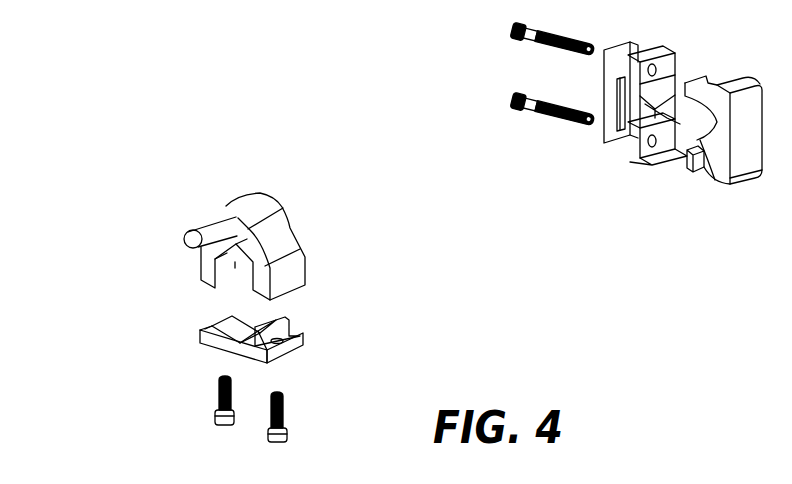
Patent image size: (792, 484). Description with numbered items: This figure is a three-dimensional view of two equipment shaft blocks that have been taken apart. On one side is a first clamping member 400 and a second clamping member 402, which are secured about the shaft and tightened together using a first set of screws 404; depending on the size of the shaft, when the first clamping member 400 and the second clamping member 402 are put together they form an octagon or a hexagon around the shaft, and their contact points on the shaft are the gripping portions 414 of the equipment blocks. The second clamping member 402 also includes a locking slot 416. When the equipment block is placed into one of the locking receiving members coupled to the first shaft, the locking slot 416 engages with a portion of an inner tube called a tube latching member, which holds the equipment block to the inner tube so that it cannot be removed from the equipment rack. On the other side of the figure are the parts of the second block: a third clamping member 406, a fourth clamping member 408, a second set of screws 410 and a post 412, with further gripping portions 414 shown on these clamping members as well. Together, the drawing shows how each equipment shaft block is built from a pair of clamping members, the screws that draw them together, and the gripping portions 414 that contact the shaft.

The first clamping member 400 is at (716, 190).
The second clamping member 402 is at (640, 168).
The first set of screws 404 is at (526, 38).
The third clamping member 406 is at (302, 251).
The fourth clamping member 408 is at (301, 352).
The second set of screws 410 is at (278, 445).
The post 412 is at (204, 228).
The gripping portions 414 is at (232, 270).
The locking slot 416 is at (622, 100).